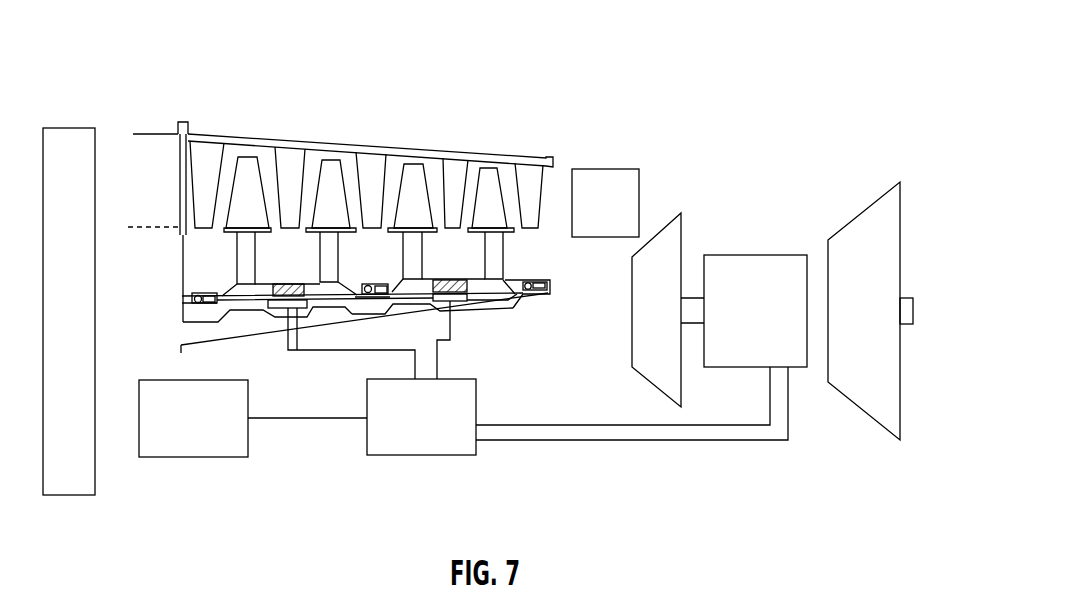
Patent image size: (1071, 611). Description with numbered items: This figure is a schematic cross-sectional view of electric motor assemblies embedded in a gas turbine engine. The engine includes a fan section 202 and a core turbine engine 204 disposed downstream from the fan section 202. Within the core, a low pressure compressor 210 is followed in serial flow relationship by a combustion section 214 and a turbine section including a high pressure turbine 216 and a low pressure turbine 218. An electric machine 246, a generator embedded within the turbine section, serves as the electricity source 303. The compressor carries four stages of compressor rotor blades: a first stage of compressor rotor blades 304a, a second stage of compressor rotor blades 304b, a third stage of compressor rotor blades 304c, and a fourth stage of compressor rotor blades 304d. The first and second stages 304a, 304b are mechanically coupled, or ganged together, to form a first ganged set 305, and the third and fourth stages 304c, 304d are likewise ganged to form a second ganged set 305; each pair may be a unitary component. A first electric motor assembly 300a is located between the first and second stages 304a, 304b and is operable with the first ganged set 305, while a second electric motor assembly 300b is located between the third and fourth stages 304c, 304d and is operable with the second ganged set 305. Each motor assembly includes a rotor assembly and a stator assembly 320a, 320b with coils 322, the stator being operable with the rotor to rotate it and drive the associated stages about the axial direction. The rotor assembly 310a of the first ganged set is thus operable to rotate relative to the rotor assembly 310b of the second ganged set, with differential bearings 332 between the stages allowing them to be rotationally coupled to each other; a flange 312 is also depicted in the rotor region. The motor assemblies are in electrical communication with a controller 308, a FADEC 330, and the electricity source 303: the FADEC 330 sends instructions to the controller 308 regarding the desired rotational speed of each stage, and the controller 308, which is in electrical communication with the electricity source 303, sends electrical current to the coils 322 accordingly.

The fan section 202 is at (70, 128).
The core turbine engine 204 is at (170, 80).
The low pressure compressor 210 is at (478, 86).
The first stage of compressor rotor blades 304a is at (247, 155).
The second stage of compressor rotor blades 304b is at (333, 158).
The third stage of compressor rotor blades 304c is at (413, 162).
The fourth stage of compressor rotor blades 304d is at (490, 166).
The first electric motor assembly 300a is at (289, 265).
The second electric motor assembly 300b is at (442, 263).
The ganged set of stages of compressor rotor blades 305 is at (235, 258).
The rotor flange / plate 312 is at (235, 246).
The rotor assembly of the first and second stages 310a is at (213, 277).
The rotor assembly of the third and fourth stages 310b is at (384, 271).
The first bearing support housing 320a is at (254, 322).
The second bearing support housing 320b is at (424, 315).
The coils 322 is at (292, 308).
The differential bearings 332 is at (373, 296).
The combustion section 214 is at (605, 168).
The high pressure turbine 216 is at (652, 383).
The electric machine 246 is at (730, 254).
The low pressure turbine 218 is at (867, 212).
The electricity source 303 is at (800, 368).
The FADEC 330 is at (197, 458).
The controller 308 is at (420, 457).